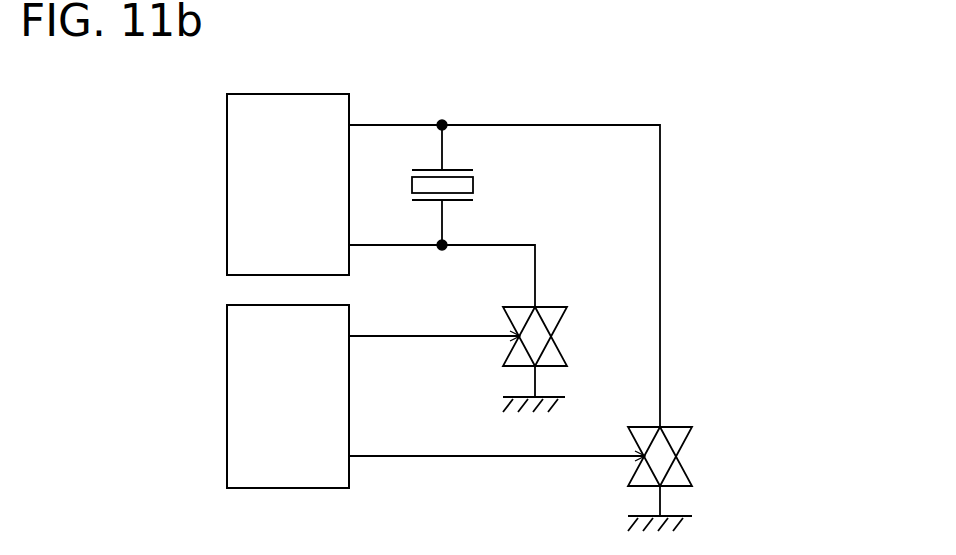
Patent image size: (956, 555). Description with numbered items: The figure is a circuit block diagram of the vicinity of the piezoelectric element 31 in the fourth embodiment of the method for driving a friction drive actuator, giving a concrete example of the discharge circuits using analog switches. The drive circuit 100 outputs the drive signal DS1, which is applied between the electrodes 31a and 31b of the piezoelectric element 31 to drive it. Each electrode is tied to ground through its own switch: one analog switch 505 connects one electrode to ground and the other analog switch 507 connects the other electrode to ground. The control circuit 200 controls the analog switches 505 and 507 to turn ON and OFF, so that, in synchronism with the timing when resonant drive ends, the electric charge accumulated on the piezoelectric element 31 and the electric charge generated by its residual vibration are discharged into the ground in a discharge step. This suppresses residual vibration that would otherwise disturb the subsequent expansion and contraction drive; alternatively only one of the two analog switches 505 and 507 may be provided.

The drive circuit 100 is at (288, 94).
The control circuit 200 is at (287, 488).
The drive signal DS1 is at (393, 245).
The piezoelectric element 31 is at (552, 97).
The electrode 31a is at (457, 168).
The electrode 31b is at (460, 203).
The analog switch 507 is at (558, 307).
The analog switch 505 is at (681, 427).